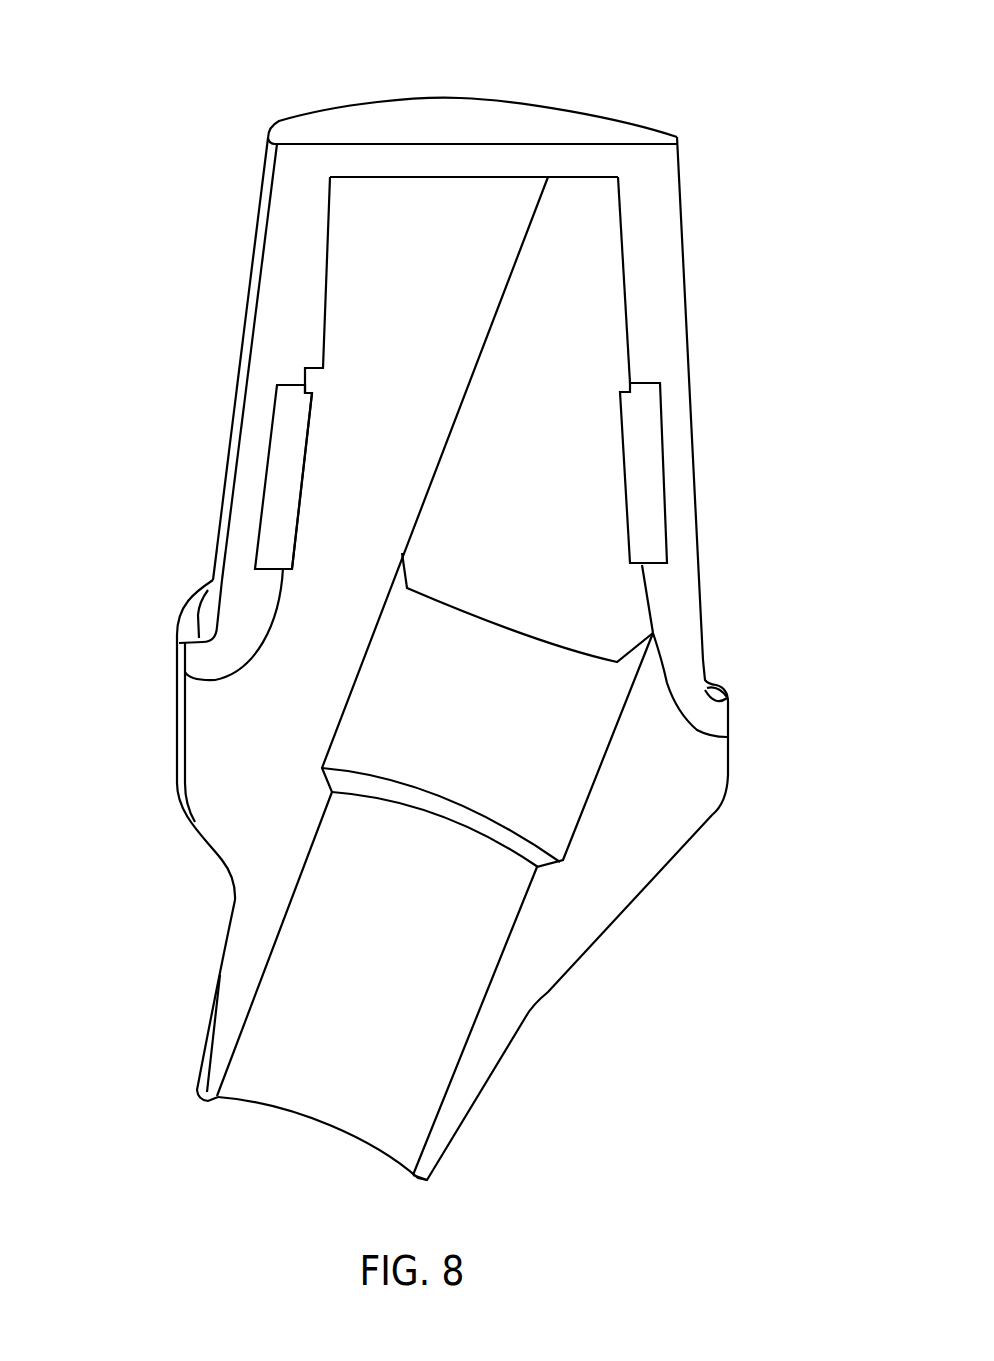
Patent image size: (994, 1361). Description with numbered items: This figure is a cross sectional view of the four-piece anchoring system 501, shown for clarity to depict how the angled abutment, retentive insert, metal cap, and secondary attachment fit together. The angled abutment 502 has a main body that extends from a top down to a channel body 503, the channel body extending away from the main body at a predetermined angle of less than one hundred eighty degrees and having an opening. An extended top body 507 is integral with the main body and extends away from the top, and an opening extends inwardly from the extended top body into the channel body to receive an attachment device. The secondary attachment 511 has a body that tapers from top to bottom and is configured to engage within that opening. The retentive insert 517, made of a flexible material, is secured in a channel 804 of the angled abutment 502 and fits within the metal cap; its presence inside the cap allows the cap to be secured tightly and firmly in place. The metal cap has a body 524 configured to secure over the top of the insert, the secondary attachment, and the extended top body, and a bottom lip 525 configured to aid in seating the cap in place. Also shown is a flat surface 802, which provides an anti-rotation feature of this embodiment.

The four-piece anchoring system 501 is at (713, 88).
The angled abutment 502 is at (147, 746).
The channel body 503 is at (223, 955).
The extended top body 507 is at (328, 235).
The secondary attachment 511 is at (625, 280).
The retentive insert 517 is at (271, 432).
The body of the metal cap 524 is at (245, 290).
The bottom lip 525 is at (181, 619).
The flat surface 802 is at (340, 210).
The channel 804 is at (290, 516).